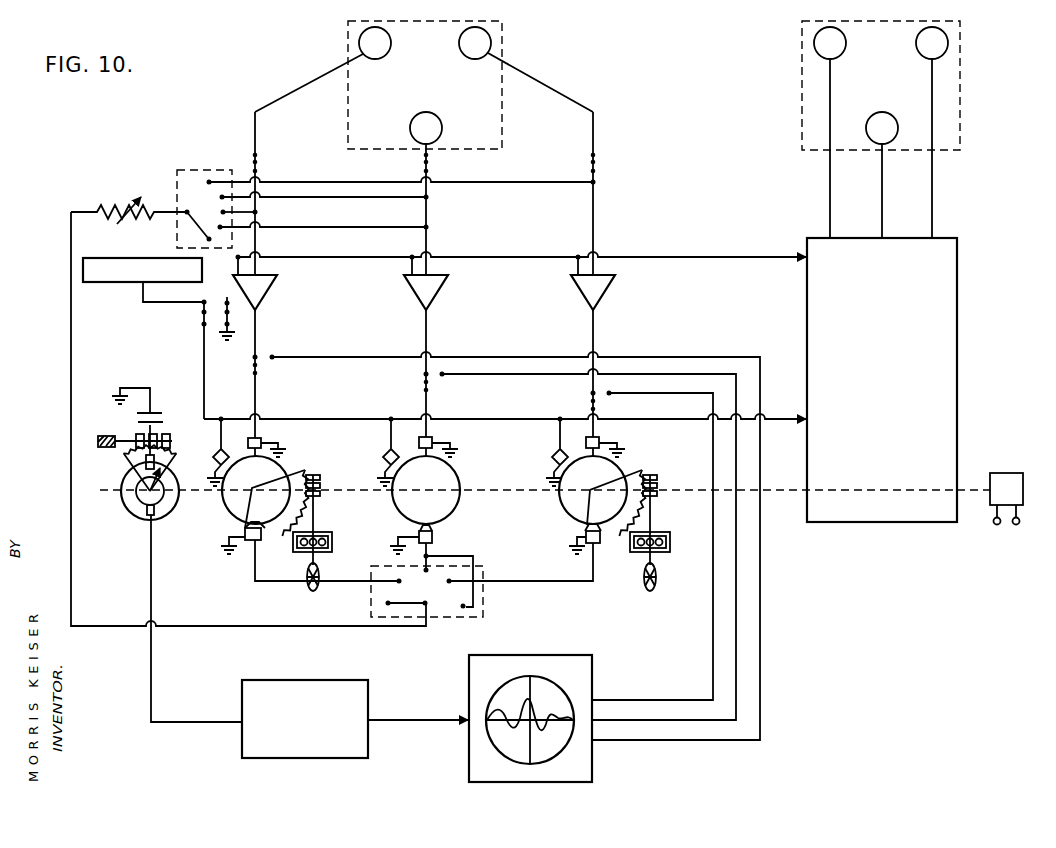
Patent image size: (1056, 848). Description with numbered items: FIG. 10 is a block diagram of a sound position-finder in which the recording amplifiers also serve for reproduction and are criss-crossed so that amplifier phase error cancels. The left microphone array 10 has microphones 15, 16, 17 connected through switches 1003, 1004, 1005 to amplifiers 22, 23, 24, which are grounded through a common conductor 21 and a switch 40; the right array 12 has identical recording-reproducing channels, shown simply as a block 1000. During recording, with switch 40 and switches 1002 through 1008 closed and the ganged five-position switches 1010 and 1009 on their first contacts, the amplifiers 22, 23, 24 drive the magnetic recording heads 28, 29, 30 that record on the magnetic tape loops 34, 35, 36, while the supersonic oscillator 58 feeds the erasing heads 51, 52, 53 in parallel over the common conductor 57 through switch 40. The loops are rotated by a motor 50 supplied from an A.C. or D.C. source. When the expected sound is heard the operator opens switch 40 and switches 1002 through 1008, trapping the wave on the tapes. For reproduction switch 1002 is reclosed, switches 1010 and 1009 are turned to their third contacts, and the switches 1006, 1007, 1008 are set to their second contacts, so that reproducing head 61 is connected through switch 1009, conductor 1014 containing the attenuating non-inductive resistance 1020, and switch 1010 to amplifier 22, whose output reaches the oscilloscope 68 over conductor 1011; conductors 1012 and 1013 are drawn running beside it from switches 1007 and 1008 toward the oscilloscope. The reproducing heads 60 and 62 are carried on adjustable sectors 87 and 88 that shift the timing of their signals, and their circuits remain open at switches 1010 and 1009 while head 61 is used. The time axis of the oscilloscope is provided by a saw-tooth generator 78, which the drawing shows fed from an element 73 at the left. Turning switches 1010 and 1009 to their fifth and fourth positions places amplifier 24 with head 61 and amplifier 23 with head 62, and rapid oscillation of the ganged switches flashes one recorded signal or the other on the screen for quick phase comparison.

The microphone array 10 is at (348, 41).
The microphone array 12 is at (802, 80).
The microphone 15 is at (391, 43).
The microphone 16 is at (466, 58).
The microphone 17 is at (414, 117).
The common conductor 21 is at (490, 257).
The amplifier 22 is at (272, 292).
The amplifier 23 is at (443, 292).
The amplifier 24 is at (610, 292).
The magnetic recording head 28 is at (261, 441).
The magnetic recording head 29 is at (432, 441).
The magnetic recording head 30 is at (599, 441).
The magnetic tape loop 34 is at (284, 468).
The magnetic tape loop 35 is at (454, 468).
The magnetic tape loop 36 is at (622, 468).
The switch 40 is at (204, 318).
The motor 50 is at (1000, 473).
The erasing head 51 is at (215, 459).
The erasing head 52 is at (385, 459).
The erasing head 53 is at (554, 459).
The common conductor 57 is at (330, 419).
The supersonic oscillator 58 is at (146, 258).
The reproducing head 60 is at (263, 540).
The reproducing head 61 is at (432, 537).
The reproducing head 62 is at (600, 543).
The cathode-ray oscilloscope 68 is at (592, 757).
The reference phase shifter with capacitor 73 is at (165, 413).
The saw-tooth generator 78 is at (371, 710).
The sector 87 is at (245, 530).
The sector 88 is at (585, 530).
The block 1000 is at (807, 285).
The switch 1002 is at (230, 324).
The switch 1003 is at (258, 163).
The switch 1004 is at (429, 163).
The switch 1005 is at (596, 163).
The switch 1006 is at (258, 364).
The switch 1007 is at (429, 381).
The switch 1008 is at (596, 400).
The five-position switch 1009 is at (483, 607).
The five-position switch 1010 is at (177, 180).
The conductor 1011 is at (743, 357).
The lead to oscilloscope 1012 is at (736, 393).
The lead to oscilloscope 1013 is at (713, 458).
The conductor 1014 is at (71, 381).
The attenuating non-inductive resistance 1020 is at (145, 199).